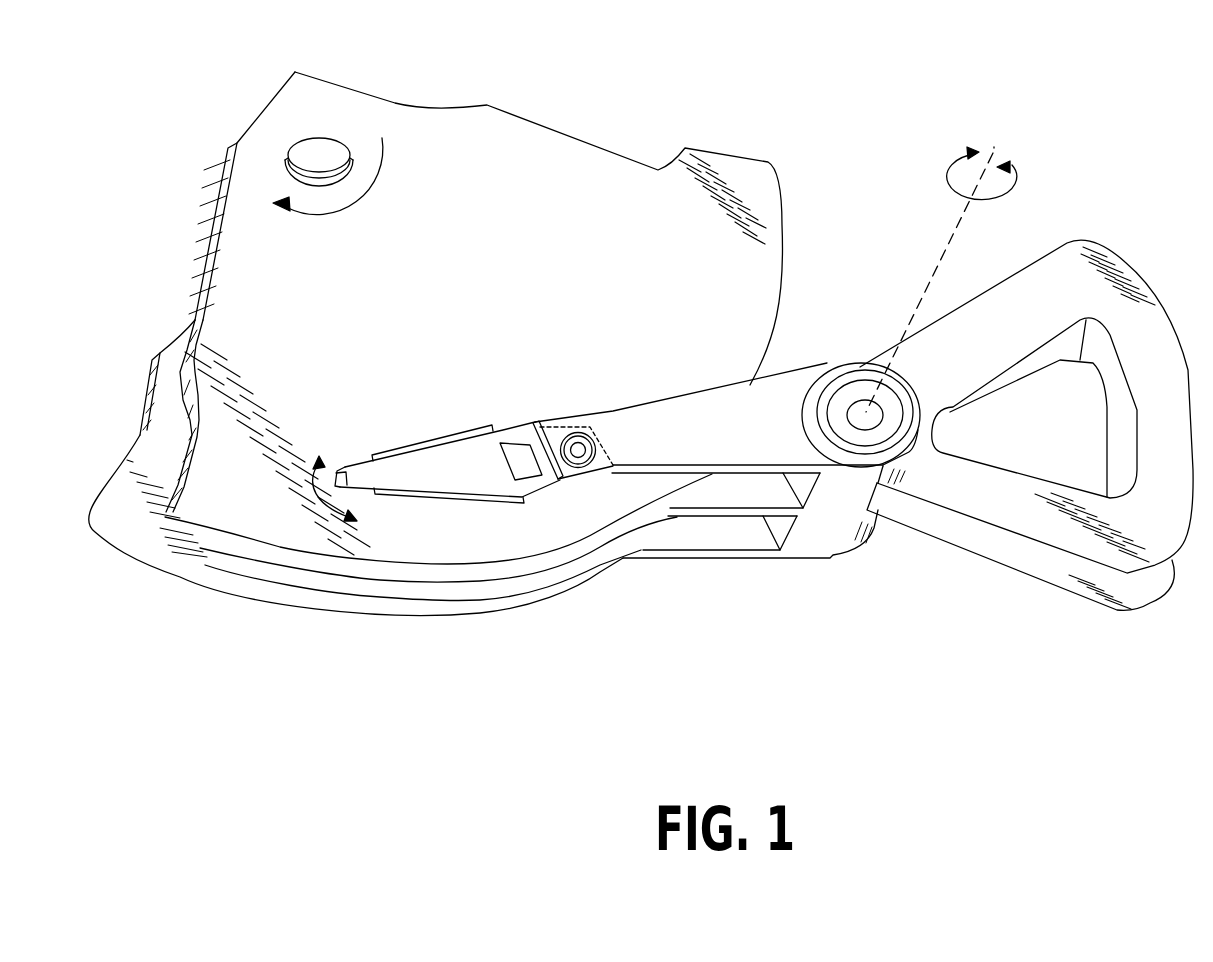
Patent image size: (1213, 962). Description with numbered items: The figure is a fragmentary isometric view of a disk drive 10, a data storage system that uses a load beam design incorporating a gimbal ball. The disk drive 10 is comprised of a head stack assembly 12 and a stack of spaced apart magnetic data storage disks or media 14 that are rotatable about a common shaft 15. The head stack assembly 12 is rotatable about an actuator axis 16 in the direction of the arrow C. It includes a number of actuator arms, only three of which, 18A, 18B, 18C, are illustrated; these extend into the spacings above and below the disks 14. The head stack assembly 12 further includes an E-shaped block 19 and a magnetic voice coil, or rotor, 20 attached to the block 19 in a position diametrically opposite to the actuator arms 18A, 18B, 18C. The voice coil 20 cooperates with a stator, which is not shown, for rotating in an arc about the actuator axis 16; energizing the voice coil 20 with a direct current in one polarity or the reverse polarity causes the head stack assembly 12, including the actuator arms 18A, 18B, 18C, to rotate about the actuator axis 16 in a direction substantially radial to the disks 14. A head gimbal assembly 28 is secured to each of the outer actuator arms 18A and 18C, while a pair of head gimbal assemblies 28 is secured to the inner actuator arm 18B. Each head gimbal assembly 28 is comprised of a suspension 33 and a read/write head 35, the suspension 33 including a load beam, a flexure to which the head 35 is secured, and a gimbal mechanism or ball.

The disk drive 10 is at (628, 33).
The head stack assembly 12 is at (830, 602).
The magnetic data storage disks 14 is at (520, 213).
The common shaft 15 is at (302, 148).
The actuator axis 16 is at (958, 228).
The actuator arm 18A is at (718, 388).
The actuator arm 18B is at (707, 512).
The actuator arm 18C is at (737, 550).
The E-shaped block 19 is at (835, 540).
The magnetic voice coil 20 is at (1010, 558).
The head gimbal assembly 28 is at (443, 413).
The suspension 33 is at (478, 482).
The read/write head 35 is at (332, 487).